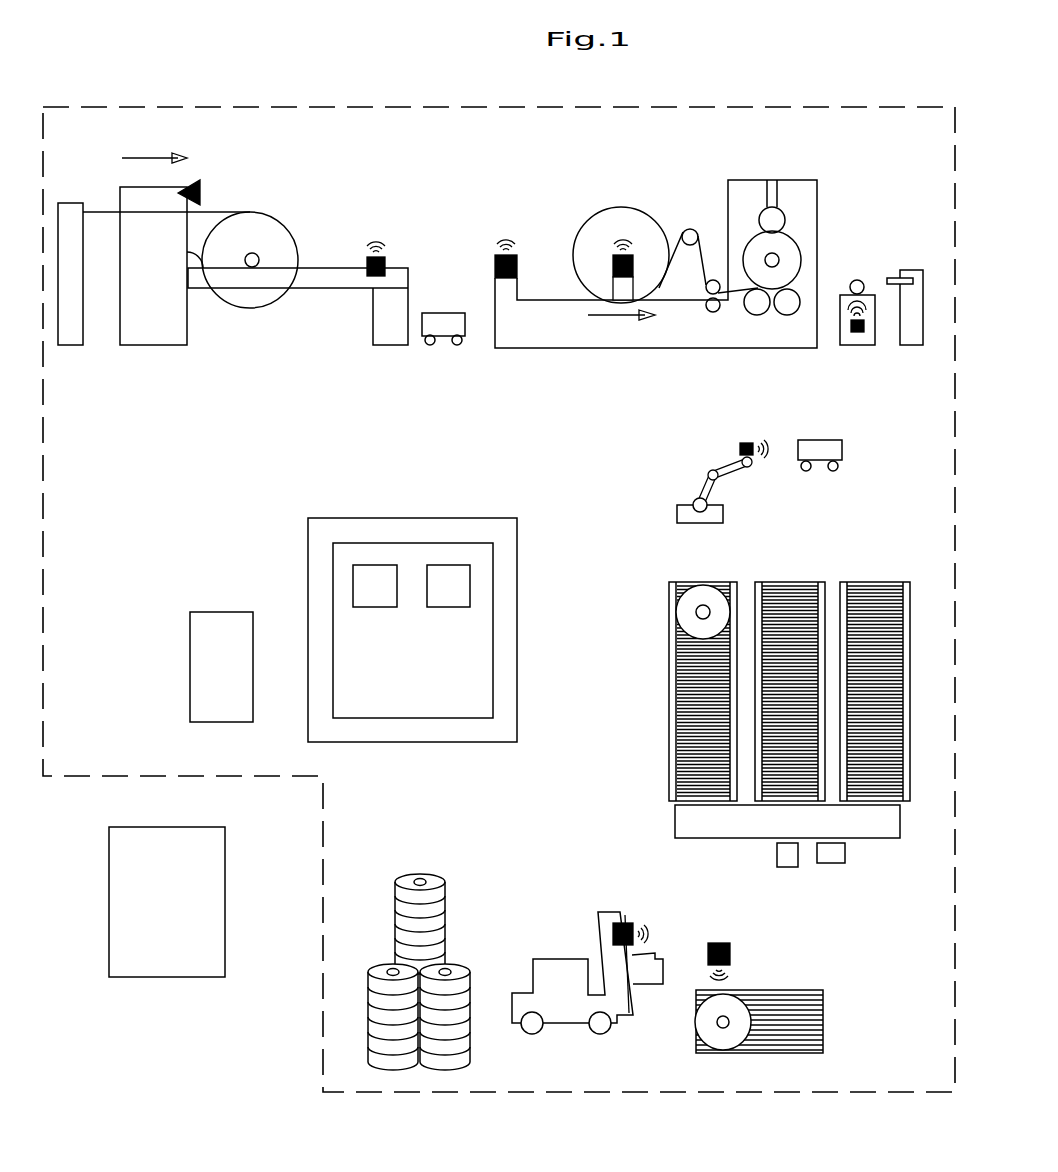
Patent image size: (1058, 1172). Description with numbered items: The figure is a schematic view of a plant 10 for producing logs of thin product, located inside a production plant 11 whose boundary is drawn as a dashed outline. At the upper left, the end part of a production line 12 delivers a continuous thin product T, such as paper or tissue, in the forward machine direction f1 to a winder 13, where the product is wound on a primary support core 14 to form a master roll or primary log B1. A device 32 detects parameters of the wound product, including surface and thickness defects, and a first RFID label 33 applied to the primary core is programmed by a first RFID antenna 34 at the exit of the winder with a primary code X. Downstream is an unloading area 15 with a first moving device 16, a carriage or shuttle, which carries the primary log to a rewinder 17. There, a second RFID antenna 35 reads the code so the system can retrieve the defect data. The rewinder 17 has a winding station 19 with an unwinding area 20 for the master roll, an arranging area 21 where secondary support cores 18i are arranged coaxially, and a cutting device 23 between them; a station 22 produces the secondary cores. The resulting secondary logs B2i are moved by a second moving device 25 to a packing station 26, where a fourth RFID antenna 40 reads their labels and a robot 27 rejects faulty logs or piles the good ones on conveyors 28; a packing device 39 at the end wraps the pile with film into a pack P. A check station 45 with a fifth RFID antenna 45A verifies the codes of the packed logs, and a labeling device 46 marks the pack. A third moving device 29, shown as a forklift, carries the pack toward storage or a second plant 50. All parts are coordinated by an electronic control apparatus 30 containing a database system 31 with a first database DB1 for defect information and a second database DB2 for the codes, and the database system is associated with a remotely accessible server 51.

The plant 10 is at (435, 186).
The production plant 11 is at (698, 104).
The production line 12 is at (68, 203).
The winder 13 is at (345, 248).
The primary support core 14 is at (258, 253).
The unloading area 15 is at (443, 298).
The first moving device 16 is at (443, 332).
The rewinder 17 is at (675, 227).
The secondary support cores 18i is at (856, 281).
The winding station 19 is at (609, 186).
The unwinding area 20 is at (626, 206).
The arranging area 21 is at (795, 258).
The station 22 is at (885, 267).
The cutting device 23 is at (695, 300).
The second moving device 25 is at (816, 451).
The packing station 26 is at (759, 664).
The robot 27 is at (713, 460).
The conveyors 28 is at (870, 597).
The third moving device 29 is at (553, 970).
The electronic control apparatus 30 is at (399, 609).
The database system 31 is at (498, 630).
The device for detecting parameters 32 is at (200, 191).
The first RFID label 33 is at (256, 251).
The first RFID antenna 34 is at (386, 262).
The second RFID antenna 35 is at (519, 263).
The packing device 39 is at (697, 820).
The fourth RFID antenna 40 is at (746, 443).
The check station 45 is at (783, 855).
The fifth RFID antenna 45A is at (730, 958).
The labeling device 46 is at (837, 855).
The second plant 50 is at (185, 905).
The server 51 is at (200, 671).
The primary log B1 is at (258, 303).
The secondary logs B2i is at (687, 613).
The first database DB1 is at (372, 578).
The second database DB2 is at (447, 578).
The pack P is at (388, 969).
The thin product T is at (98, 212).
The forward movement direction f1 is at (143, 157).